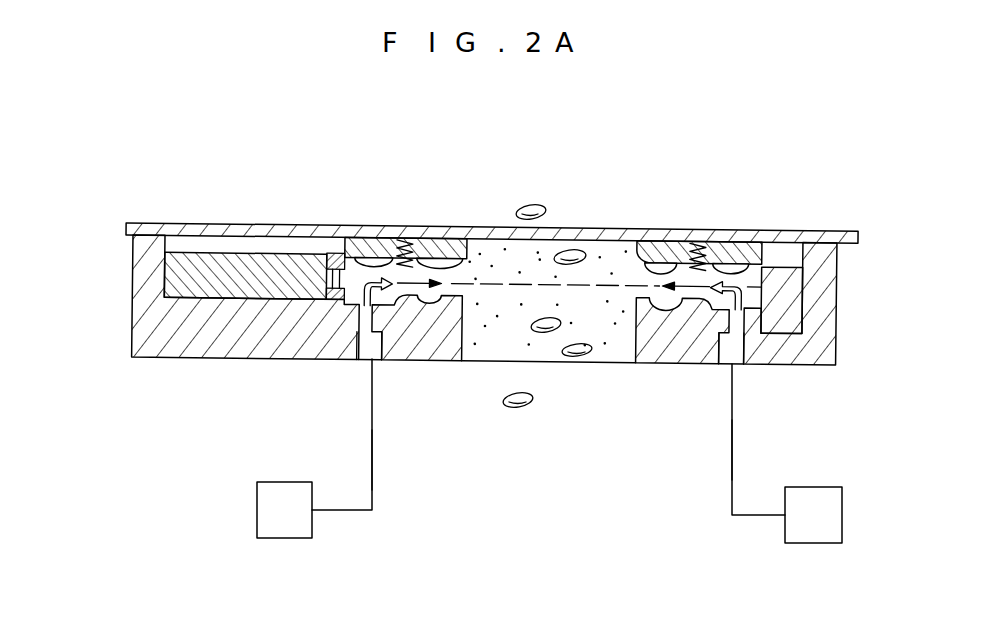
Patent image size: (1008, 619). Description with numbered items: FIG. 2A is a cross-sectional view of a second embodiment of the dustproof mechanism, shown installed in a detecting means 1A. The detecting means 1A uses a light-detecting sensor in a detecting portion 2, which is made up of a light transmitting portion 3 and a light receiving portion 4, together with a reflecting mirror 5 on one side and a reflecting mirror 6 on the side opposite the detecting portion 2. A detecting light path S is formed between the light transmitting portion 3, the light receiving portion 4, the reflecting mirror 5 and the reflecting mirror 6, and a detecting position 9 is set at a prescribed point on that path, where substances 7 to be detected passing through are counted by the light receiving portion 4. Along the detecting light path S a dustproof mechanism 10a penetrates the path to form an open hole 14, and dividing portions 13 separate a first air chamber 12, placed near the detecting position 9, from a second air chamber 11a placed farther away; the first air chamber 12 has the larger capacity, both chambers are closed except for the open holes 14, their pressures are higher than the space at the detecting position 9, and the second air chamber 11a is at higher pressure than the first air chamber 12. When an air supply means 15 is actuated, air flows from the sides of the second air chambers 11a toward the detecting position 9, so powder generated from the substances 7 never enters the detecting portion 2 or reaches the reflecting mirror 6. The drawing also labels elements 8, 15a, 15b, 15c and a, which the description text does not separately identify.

The detecting means 1A is at (237, 210).
The detecting portion 2 is at (197, 258).
The light transmitting portion 3 is at (312, 224).
The light receiving portion 4 is at (326, 224).
The reflecting mirror 5 is at (343, 224).
The reflecting mirror 6 is at (798, 318).
The substance to be detected 7 is at (514, 408).
The liquid 8 is at (622, 357).
The detecting position 9 is at (587, 223).
The dustproof mechanism 10a is at (408, 224).
The second air chamber 11a is at (378, 224).
The first air chamber 12 is at (670, 235).
The dividing portion 13 is at (448, 224).
The open hole 14 is at (632, 237).
The air supply means 15 is at (388, 468).
The pump 15a is at (300, 519).
The pipe 15b is at (372, 428).
The port 15c is at (382, 340).
The inlet passage a is at (345, 360).
The detecting light path S is at (480, 292).